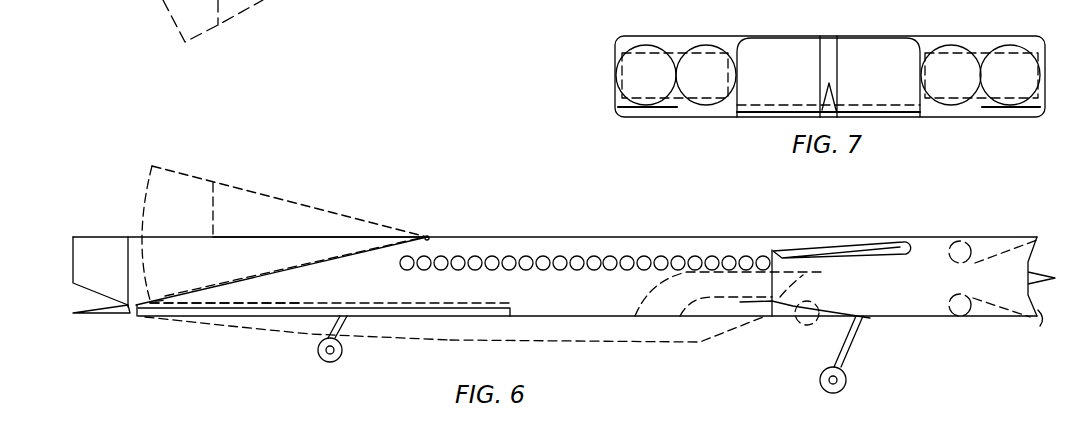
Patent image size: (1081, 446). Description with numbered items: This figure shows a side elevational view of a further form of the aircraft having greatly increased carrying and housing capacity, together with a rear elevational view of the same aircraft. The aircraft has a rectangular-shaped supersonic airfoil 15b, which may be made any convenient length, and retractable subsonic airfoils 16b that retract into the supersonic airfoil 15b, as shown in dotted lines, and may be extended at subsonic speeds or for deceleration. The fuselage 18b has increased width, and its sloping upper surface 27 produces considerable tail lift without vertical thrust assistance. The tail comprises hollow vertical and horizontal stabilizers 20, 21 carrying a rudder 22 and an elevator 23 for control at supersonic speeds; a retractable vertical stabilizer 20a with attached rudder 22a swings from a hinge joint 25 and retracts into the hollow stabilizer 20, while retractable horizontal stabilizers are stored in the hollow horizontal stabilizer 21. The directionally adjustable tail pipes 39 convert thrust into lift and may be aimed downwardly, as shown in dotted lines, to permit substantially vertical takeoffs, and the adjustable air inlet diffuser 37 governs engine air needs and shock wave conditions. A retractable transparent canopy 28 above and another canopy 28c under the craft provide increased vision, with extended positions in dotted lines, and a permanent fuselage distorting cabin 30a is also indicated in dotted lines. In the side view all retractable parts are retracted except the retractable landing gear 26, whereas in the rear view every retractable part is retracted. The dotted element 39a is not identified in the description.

In FIG. 7, the supersonic airfoil 15b is at (660, 36).
In FIG. 6, the supersonic airfoil 15b is at (880, 318).
In FIG. 6, the retractable subsonic airfoil 16b is at (888, 241).
In FIG. 7, the fuselage 18b is at (776, 39).
In FIG. 6, the fuselage 18b is at (490, 237).
In FIG. 6, the hollow vertical stabilizer 20 is at (229, 237).
In FIG. 6, the retractable vertical stabilizer 20a is at (315, 208).
In FIG. 6, the hollow horizontal stabilizer 21 is at (214, 319).
In FIG. 7, the rudder 22 is at (838, 36).
In FIG. 6, the rudder 22 is at (92, 237).
In FIG. 6, the retractable rudder 22a is at (152, 168).
In FIG. 6, the elevator 23 is at (125, 314).
In FIG. 6, the hinge joint 25 is at (427, 240).
In FIG. 6, the retractable landing gear 26 is at (342, 350).
In FIG. 6, the sloping upper surface 27 is at (328, 263).
In FIG. 6, the retractable transparent canopy 28 is at (913, 233).
In FIG. 6, the retractable transparent canopy 28c is at (917, 327).
In FIG. 6, the fuselage distorting cabin 30a is at (640, 342).
In FIG. 6, the adjustable air inlet diffuser 37 is at (1037, 320).
In FIG. 6, the directionally adjustable tail pipe 39 is at (813, 326).
In FIG. 6, the wheel well door 39a is at (680, 293).